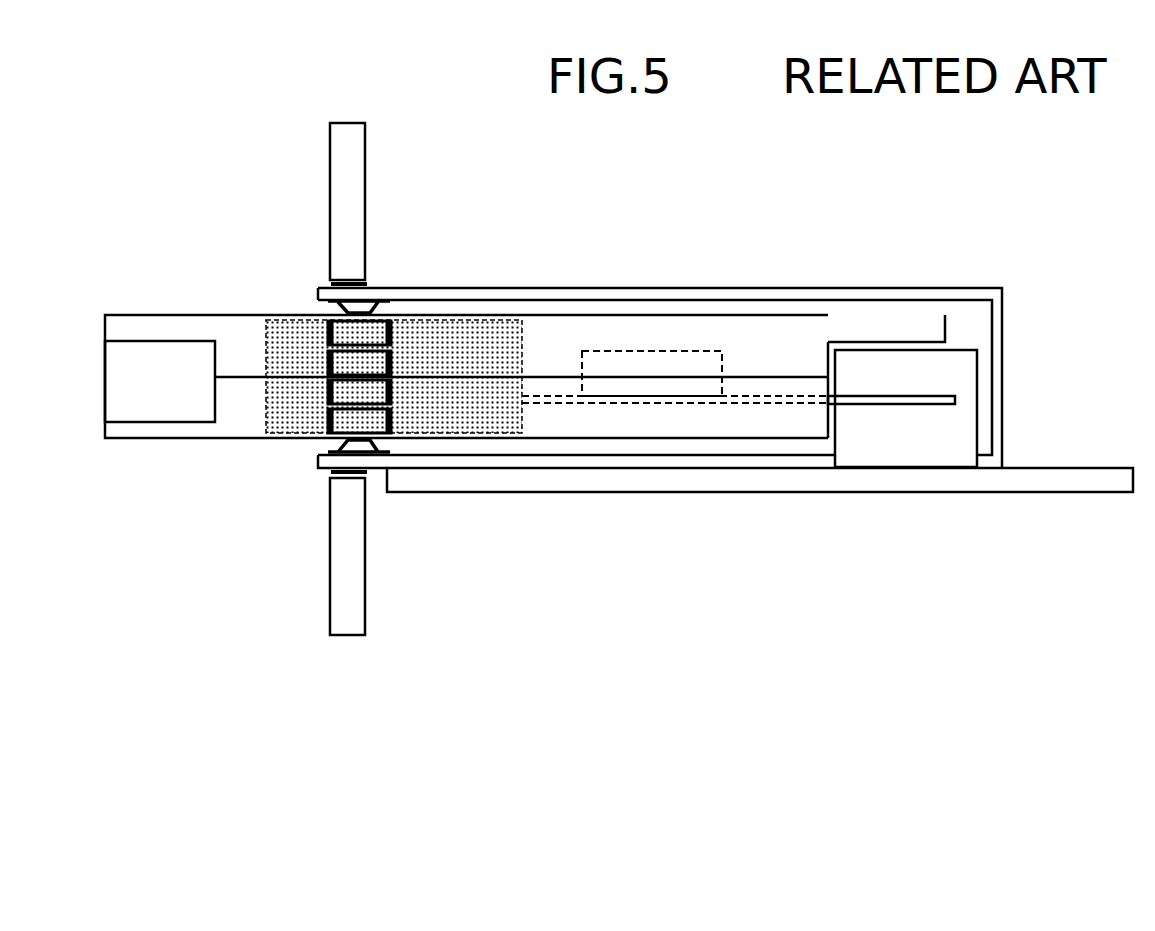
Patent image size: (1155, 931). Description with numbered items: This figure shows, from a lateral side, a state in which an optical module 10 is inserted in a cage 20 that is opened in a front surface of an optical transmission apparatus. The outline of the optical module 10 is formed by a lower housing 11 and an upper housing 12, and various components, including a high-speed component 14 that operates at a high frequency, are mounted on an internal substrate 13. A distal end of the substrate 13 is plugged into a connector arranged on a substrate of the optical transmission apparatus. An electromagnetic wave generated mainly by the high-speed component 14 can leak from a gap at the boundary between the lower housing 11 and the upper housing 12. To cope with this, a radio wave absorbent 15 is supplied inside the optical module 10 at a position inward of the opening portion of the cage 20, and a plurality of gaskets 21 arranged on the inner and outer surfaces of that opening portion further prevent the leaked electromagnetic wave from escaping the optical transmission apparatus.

The optical module 10 is at (144, 289).
The lower housing 11 is at (555, 428).
The upper housing 12 is at (772, 330).
The substrate 13 is at (770, 405).
The high-speed component 14 is at (650, 350).
The radio wave absorbent 15 is at (490, 335).
The cage 20 is at (897, 288).
The gaskets 21 is at (367, 333).